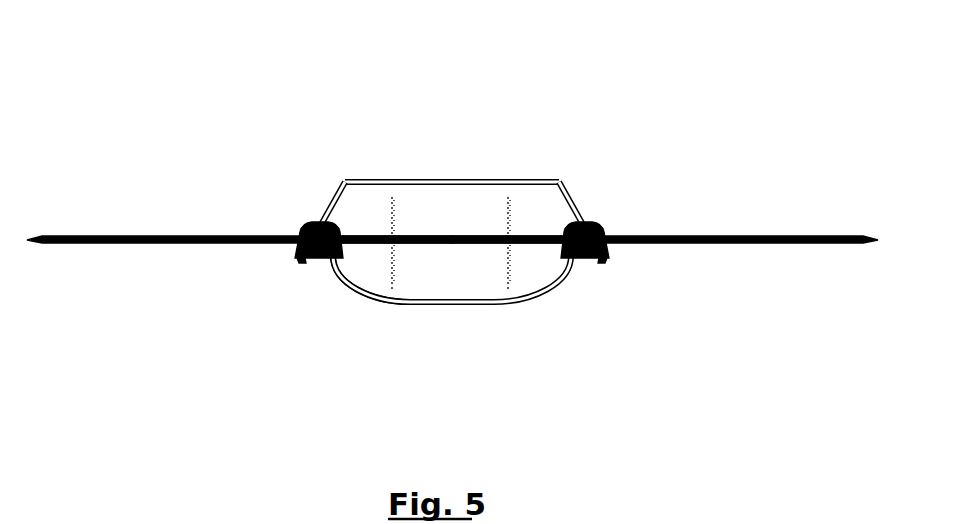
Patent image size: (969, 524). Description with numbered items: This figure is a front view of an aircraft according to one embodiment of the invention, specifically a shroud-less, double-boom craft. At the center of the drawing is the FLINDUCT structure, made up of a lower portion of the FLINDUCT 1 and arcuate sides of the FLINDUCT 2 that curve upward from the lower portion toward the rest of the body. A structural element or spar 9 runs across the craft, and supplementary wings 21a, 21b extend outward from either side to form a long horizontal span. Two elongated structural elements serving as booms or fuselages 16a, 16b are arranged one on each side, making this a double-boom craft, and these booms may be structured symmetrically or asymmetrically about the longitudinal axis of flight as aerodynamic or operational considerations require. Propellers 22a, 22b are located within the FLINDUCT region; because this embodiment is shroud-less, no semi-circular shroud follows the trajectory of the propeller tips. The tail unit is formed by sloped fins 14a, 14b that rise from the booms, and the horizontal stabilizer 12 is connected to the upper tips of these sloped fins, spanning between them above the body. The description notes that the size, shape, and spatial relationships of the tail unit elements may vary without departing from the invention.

The lower portion of the FLINDUCT 1 is at (403, 300).
The arcuate sides of the FLINDUCT 2 is at (325, 275).
The structural element, spar 9 is at (443, 240).
The horizontal stabilizer 12 is at (436, 183).
The sloped fin 14a is at (323, 203).
The sloped fin 14b is at (563, 203).
The elongated structural element, boom, fuselage 16a is at (310, 233).
The elongated structural element, boom, fuselage 16b is at (582, 233).
The supplementary wing 21a is at (118, 241).
The supplementary wing 21b is at (696, 240).
The propeller 22a is at (385, 265).
The propeller 22b is at (502, 267).